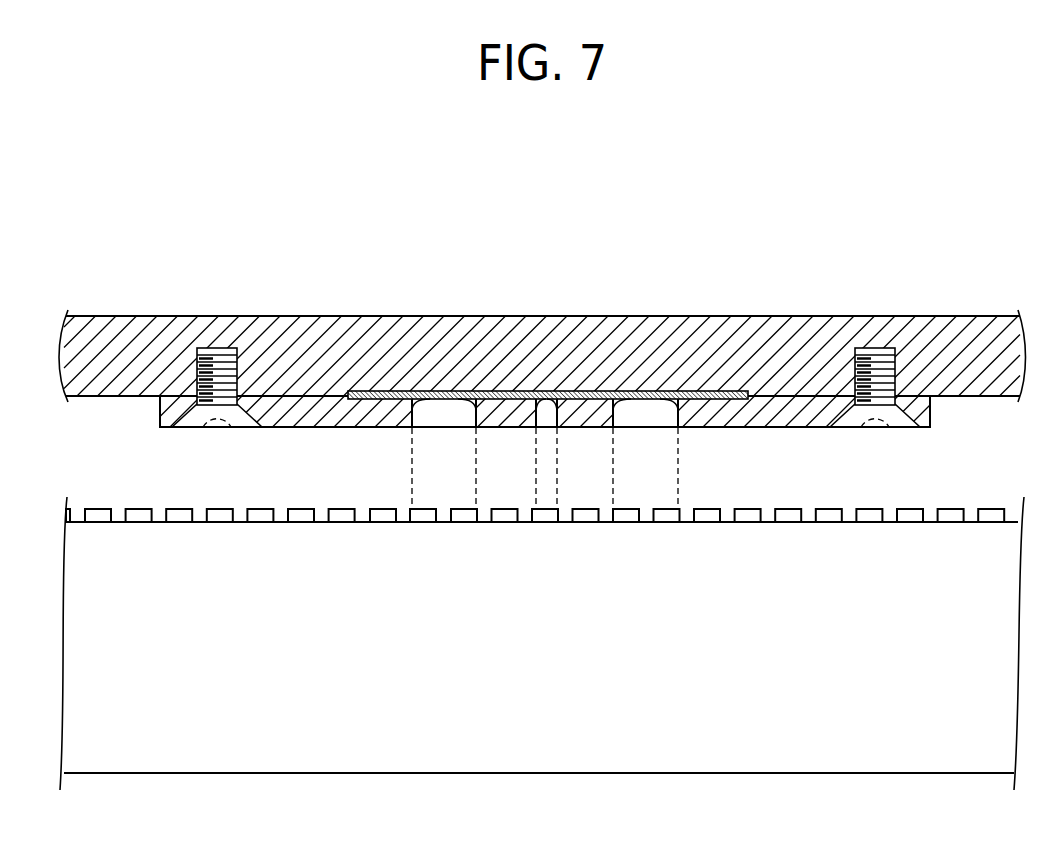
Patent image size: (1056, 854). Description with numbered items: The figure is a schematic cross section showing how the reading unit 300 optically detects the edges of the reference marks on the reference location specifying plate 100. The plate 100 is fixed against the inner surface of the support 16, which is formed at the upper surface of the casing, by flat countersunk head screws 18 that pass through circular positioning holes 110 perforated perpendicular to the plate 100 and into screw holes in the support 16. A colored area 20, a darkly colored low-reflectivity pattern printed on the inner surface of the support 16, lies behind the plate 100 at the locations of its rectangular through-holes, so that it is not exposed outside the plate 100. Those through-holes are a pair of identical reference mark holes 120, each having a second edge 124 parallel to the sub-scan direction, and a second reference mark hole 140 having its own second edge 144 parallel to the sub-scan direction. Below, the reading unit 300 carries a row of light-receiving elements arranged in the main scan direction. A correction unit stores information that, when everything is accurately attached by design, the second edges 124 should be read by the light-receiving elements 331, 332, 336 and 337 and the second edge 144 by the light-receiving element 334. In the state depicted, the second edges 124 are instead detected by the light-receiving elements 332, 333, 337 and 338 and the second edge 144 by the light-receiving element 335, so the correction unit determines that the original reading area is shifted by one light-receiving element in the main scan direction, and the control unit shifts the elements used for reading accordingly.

The support 16 is at (120, 316).
The flat countersunk head screw 18 is at (212, 429).
The colored area 20 is at (723, 392).
The reference location specifying plate 100 is at (160, 412).
The positioning hole 110 is at (248, 410).
The reference mark hole 120 is at (430, 442).
The second edge 124 is at (441, 392).
The second reference mark hole 140 is at (537, 442).
The second edge 144 is at (547, 392).
The reading unit 300 is at (378, 762).
The light-receiving element 331 is at (382, 523).
The light-receiving element 332 is at (421, 523).
The light-receiving element 333 is at (461, 523).
The light-receiving element 334 is at (502, 523).
The light-receiving element 335 is at (544, 523).
The light-receiving element 336 is at (583, 523).
The light-receiving element 337 is at (624, 523).
The light-receiving element 338 is at (665, 523).